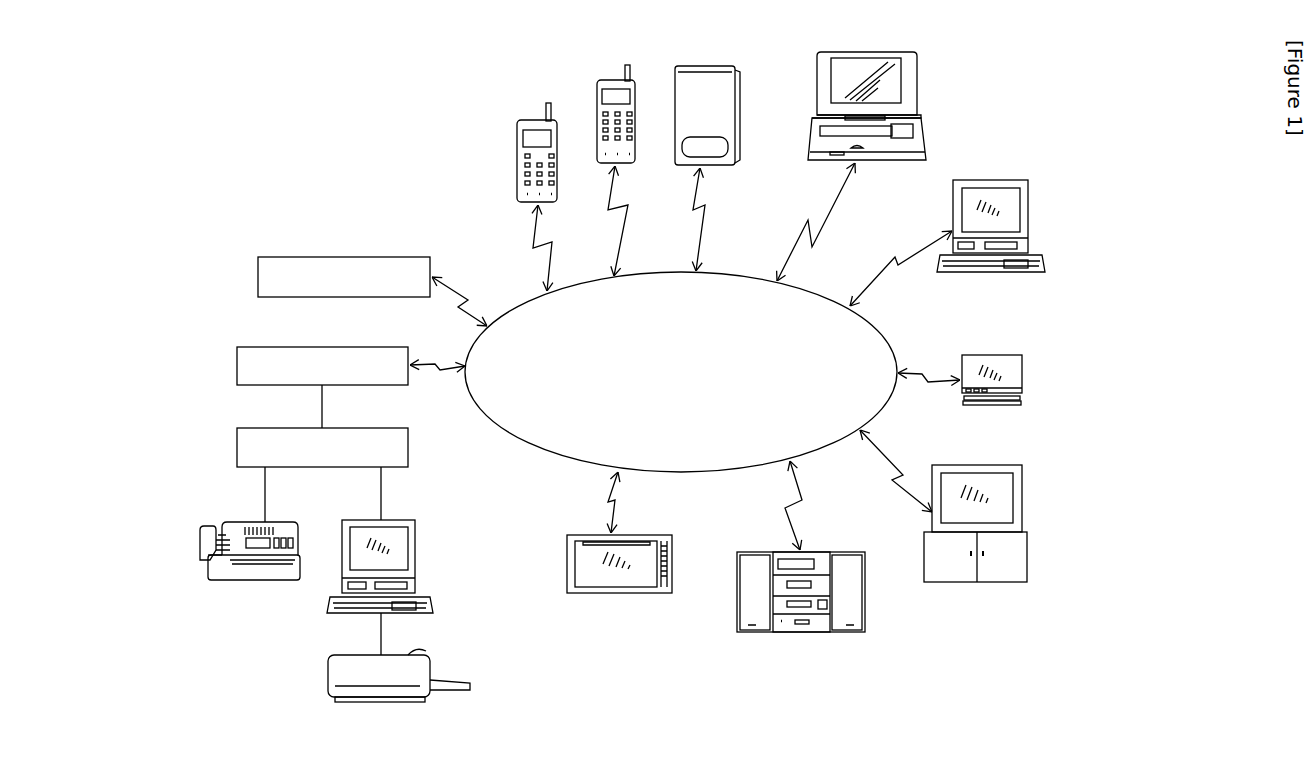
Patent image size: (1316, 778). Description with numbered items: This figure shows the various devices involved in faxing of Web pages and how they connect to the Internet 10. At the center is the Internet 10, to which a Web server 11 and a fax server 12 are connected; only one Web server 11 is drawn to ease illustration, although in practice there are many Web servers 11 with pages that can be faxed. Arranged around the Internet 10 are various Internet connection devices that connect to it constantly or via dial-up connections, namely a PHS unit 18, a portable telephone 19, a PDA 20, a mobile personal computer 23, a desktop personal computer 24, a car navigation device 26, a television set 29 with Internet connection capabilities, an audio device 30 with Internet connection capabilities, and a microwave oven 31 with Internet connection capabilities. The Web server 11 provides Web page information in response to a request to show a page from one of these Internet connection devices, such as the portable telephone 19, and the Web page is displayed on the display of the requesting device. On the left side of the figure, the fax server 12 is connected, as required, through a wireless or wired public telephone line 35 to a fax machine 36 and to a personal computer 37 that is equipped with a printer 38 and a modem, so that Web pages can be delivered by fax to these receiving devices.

The Internet 10 is at (507, 311).
The Web server 11 is at (258, 277).
The fax server 12 is at (237, 366).
The PHS unit 18 is at (536, 120).
The portable telephone 19 is at (608, 75).
The PDA 20 is at (704, 65).
The mobile personal computer 23 is at (866, 52).
The desktop personal computer 24 is at (1030, 195).
The car navigation device 26 is at (1023, 372).
The television set 29 is at (1023, 500).
The audio device 30 is at (813, 634).
The microwave oven 31 is at (613, 596).
The public telephone line 35 is at (237, 448).
The fax machine 36 is at (253, 581).
The personal computer 37 is at (418, 538).
The printer 38 is at (328, 677).